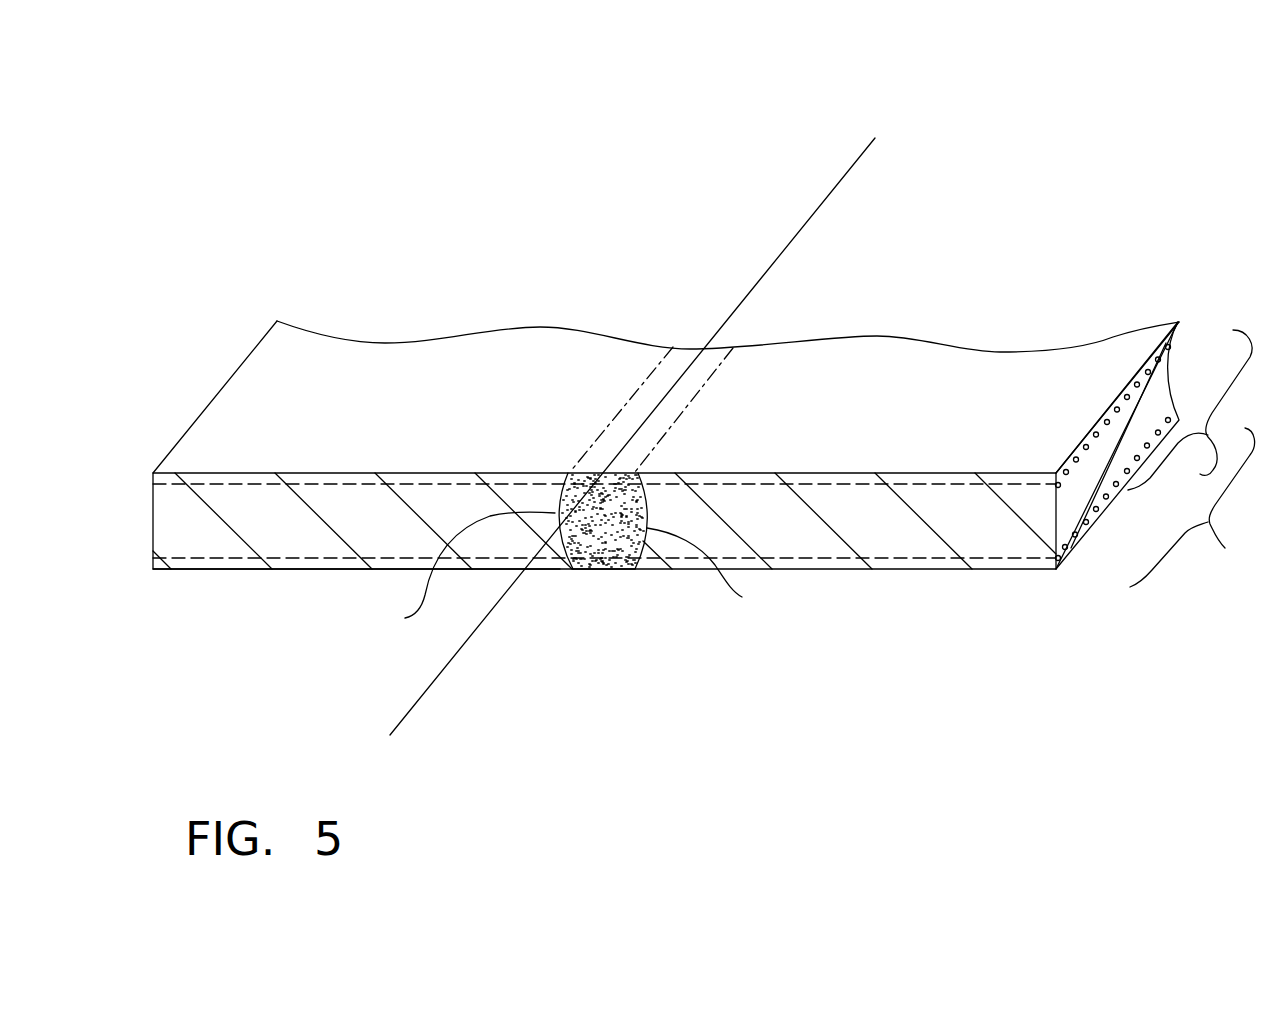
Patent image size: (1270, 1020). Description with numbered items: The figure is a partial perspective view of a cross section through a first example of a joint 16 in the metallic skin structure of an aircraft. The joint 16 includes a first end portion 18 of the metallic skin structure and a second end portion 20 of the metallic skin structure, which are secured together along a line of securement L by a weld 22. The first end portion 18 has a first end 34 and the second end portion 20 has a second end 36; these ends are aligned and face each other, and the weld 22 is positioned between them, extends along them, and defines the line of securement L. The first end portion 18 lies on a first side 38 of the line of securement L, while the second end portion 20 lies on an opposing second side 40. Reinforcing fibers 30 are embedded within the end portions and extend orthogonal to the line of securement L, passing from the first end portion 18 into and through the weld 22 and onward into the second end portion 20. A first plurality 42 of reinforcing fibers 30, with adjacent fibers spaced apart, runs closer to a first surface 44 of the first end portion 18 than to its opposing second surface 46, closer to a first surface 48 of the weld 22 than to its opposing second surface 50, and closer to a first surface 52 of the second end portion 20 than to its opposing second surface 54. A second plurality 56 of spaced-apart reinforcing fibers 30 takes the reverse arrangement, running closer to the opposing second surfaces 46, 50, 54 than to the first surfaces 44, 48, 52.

The joint 16 is at (470, 150).
The first end portion 18 is at (1012, 375).
The second end portion 20 is at (497, 347).
The weld 22 is at (602, 569).
The reinforcing fiber 30 is at (300, 467).
The first end 34 is at (713, 570).
The second end 36 is at (459, 572).
The first side 38 is at (928, 286).
The opposing second side 40 is at (552, 279).
The first plurality of reinforcing fibers 42 is at (1190, 411).
The first surface 44 is at (810, 425).
The opposing second surface 46 is at (800, 572).
The first surface 48 is at (627, 420).
The opposing second surface 50 is at (617, 570).
The first surface 52 is at (478, 432).
The opposing second surface 54 is at (327, 572).
The second plurality of reinforcing fibers 56 is at (1192, 507).
The line of securement L is at (815, 210).